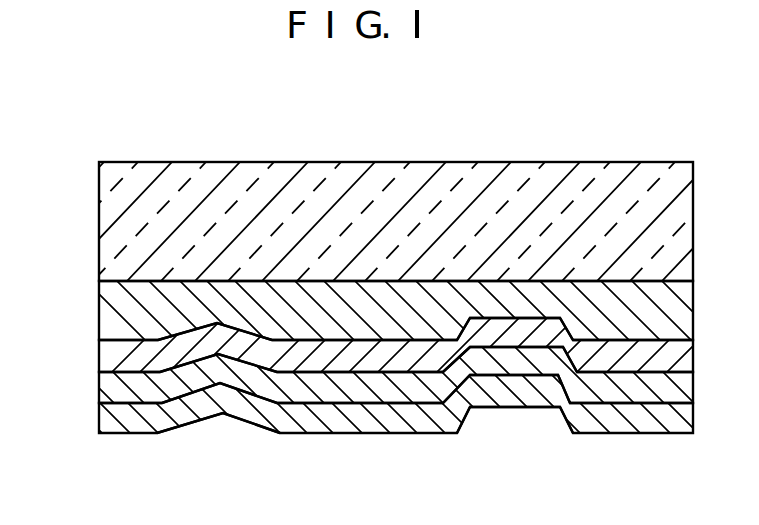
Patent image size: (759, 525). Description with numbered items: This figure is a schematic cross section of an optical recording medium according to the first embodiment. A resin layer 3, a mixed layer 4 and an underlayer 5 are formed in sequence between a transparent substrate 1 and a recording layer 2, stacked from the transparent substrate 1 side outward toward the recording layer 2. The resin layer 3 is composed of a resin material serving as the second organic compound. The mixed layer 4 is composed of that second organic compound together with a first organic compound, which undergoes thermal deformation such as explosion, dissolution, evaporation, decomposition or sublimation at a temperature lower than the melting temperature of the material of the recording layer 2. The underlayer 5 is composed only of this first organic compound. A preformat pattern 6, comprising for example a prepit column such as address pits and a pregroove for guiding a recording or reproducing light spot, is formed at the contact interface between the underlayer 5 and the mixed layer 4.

The transparent substrate 1 is at (98, 202).
The recording layer 2 is at (97, 425).
The resin layer 3 is at (97, 315).
The mixed layer 4 is at (97, 358).
The underlayer 5 is at (97, 392).
The preformat pattern 6 is at (232, 357).